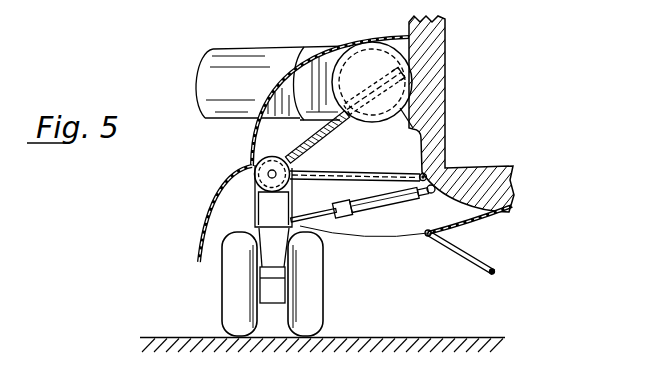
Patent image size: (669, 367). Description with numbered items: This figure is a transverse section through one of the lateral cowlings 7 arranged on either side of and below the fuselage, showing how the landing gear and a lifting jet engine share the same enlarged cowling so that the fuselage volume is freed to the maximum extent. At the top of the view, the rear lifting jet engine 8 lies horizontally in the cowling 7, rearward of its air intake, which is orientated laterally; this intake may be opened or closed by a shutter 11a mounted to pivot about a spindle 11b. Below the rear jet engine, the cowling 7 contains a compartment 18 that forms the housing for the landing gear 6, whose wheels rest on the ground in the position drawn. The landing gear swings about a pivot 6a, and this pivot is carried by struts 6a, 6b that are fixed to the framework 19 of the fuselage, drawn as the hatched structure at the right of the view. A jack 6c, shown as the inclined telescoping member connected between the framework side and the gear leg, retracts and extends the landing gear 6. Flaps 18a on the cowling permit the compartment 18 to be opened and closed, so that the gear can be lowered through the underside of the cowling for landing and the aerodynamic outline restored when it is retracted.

The landing gear 6 is at (268, 293).
The pivot of the landing gear 6a is at (336, 133).
The strut 6b is at (425, 175).
The jack 6c is at (381, 206).
The lateral cowling 7 is at (250, 166).
The lifting jet engine 8 is at (352, 43).
The shutter 11a is at (233, 63).
The spindle 11b is at (308, 50).
The compartment 18 is at (330, 158).
The flap 18a is at (497, 253).
The framework of the fuselage 19 is at (433, 118).